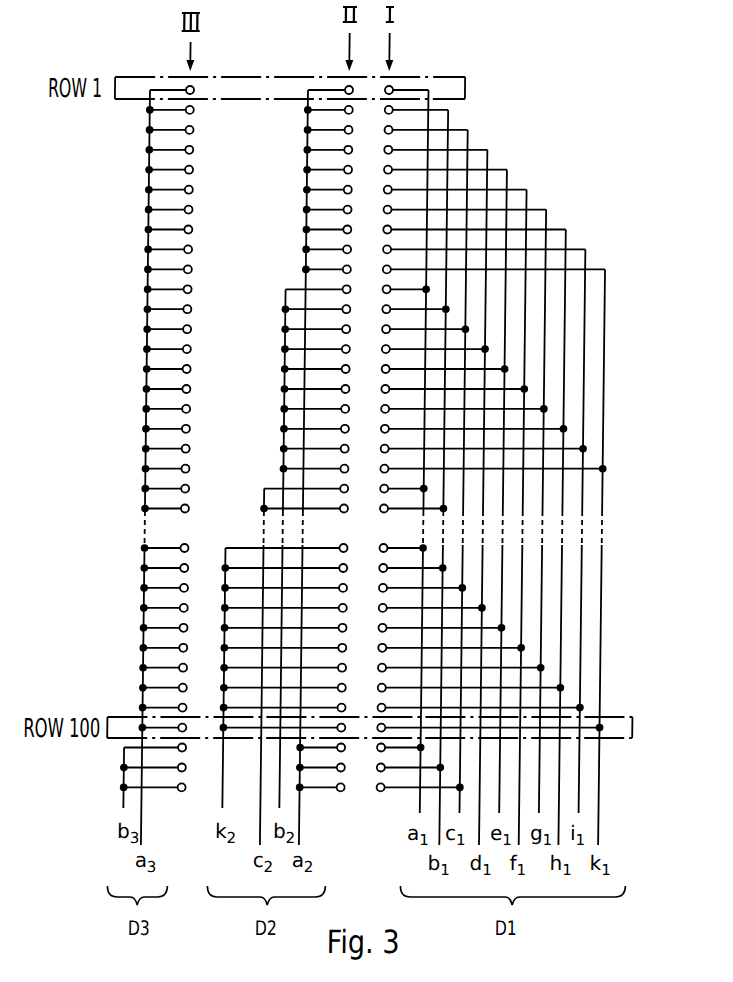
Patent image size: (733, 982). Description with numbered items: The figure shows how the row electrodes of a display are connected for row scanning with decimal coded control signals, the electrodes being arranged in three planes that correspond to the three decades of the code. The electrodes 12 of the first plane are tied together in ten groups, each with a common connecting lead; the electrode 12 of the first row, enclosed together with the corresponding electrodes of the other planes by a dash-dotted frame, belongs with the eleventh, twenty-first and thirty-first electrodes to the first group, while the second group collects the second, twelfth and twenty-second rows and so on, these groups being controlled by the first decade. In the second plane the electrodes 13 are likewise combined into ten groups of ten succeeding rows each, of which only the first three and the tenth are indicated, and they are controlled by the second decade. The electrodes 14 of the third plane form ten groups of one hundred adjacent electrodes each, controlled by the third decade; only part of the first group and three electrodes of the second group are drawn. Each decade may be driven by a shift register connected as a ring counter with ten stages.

The electrodes of plane I 12 is at (393, 86).
The electrodes of plane II 13 is at (345, 86).
The electrodes of plane III 14 is at (193, 86).